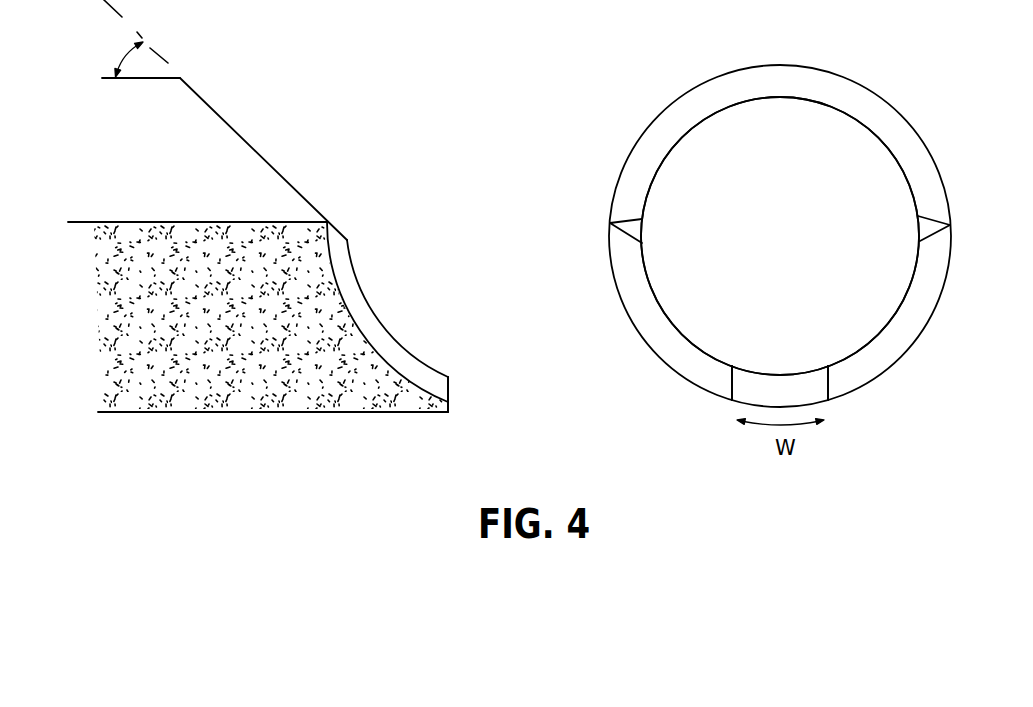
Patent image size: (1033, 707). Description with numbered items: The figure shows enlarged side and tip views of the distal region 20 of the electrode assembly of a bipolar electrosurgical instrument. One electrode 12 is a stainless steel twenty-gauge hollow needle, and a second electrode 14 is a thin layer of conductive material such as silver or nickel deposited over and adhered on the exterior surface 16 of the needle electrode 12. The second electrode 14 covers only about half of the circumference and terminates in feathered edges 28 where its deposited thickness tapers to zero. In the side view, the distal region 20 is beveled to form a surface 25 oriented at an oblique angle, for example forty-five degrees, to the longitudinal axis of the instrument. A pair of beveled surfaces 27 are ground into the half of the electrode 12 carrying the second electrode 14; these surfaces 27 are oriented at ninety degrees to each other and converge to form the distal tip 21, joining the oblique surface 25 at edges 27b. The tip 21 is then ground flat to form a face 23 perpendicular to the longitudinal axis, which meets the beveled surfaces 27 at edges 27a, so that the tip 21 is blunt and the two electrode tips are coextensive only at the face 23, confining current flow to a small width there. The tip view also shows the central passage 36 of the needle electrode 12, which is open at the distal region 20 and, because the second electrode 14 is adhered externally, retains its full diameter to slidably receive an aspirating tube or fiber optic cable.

The electrode 12 is at (158, 97).
The second electrode 14 is at (175, 400).
The exterior surface 16 is at (144, 166).
The distal region 20 is at (565, 220).
The distal tip 21 is at (468, 394).
The face 23 is at (452, 383).
The beveled surface 25 is at (262, 147).
The beveled surfaces 27 is at (344, 268).
The edges 27a is at (725, 393).
The edges 27b is at (622, 226).
The edges 28 is at (175, 222).
The central passage 36 is at (793, 242).